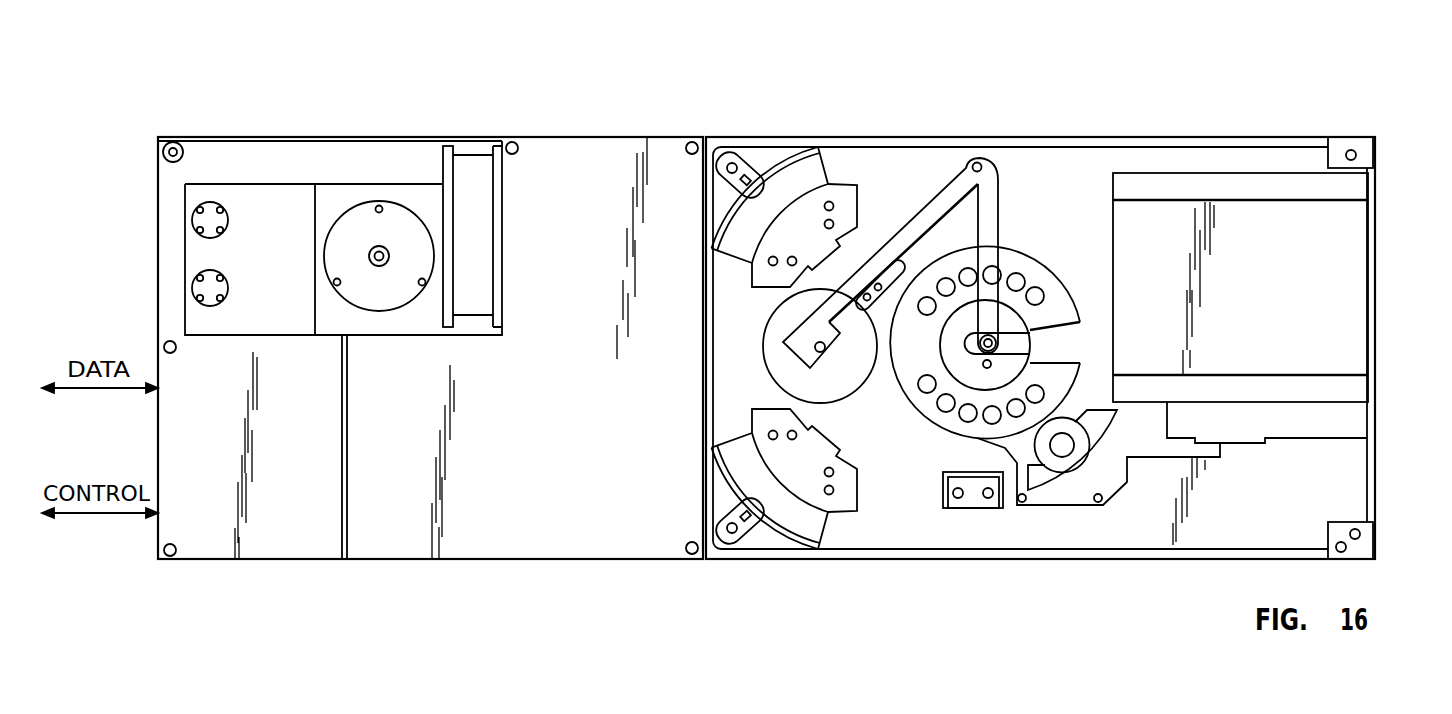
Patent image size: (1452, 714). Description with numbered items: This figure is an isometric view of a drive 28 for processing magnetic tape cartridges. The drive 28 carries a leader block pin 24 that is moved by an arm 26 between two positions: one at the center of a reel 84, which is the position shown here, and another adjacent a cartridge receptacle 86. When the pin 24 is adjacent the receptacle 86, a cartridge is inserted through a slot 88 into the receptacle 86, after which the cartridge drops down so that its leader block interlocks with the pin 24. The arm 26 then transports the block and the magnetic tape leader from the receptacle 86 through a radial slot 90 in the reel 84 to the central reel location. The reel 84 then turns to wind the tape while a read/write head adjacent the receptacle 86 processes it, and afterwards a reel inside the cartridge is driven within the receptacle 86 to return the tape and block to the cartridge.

The drive 28 is at (607, 128).
The arm 26 is at (997, 228).
The reel 84 is at (1066, 286).
The leader block pin 24 is at (978, 348).
The radial slot 90 is at (1057, 342).
The cartridge receptacle 86 is at (1233, 298).
The slot 88 is at (1376, 293).